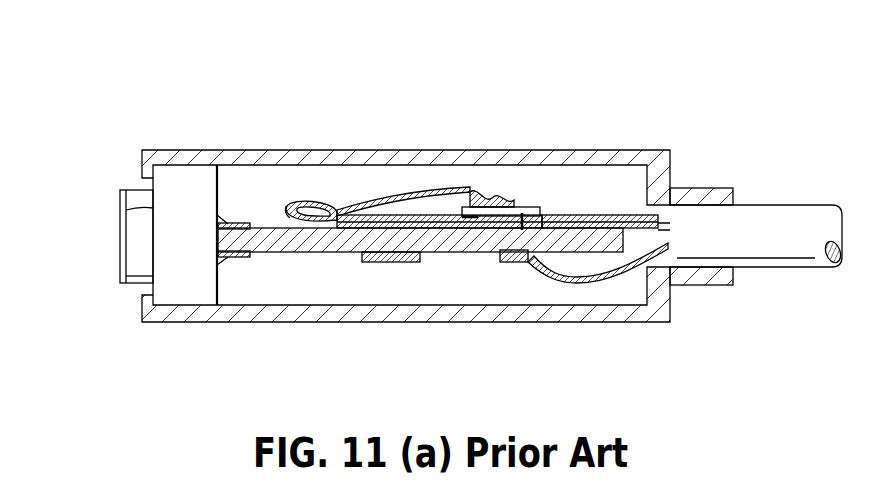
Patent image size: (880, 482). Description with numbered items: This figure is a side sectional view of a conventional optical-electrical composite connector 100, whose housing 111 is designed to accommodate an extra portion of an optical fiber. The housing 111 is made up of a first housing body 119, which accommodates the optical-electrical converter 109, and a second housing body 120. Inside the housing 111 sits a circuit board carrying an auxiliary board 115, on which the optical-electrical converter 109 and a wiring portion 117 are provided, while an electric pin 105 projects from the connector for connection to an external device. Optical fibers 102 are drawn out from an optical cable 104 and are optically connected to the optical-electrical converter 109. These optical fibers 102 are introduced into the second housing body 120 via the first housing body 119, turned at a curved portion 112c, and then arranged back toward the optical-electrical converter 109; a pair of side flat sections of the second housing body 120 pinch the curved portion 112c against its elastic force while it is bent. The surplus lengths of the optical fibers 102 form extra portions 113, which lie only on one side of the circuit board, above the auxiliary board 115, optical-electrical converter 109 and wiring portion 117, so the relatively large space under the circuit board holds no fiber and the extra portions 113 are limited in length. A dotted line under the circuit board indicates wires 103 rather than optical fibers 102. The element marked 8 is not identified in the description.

The optical-electrical composite connector 100 is at (710, 114).
The optical fibers 102 is at (598, 222).
The wires 103 is at (578, 280).
The optical cable 104 is at (777, 223).
The electric pin 105 is at (120, 260).
The optical-electrical converter 109 is at (458, 188).
The housing 111 is at (425, 62).
The curved portion 112c is at (285, 215).
The extra portions 113 is at (352, 228).
The auxiliary board 115 is at (528, 204).
The wiring portion 117 is at (512, 196).
The first housing body 119 is at (435, 152).
The second housing body 120 is at (286, 150).
The bushing 8 is at (264, 256).